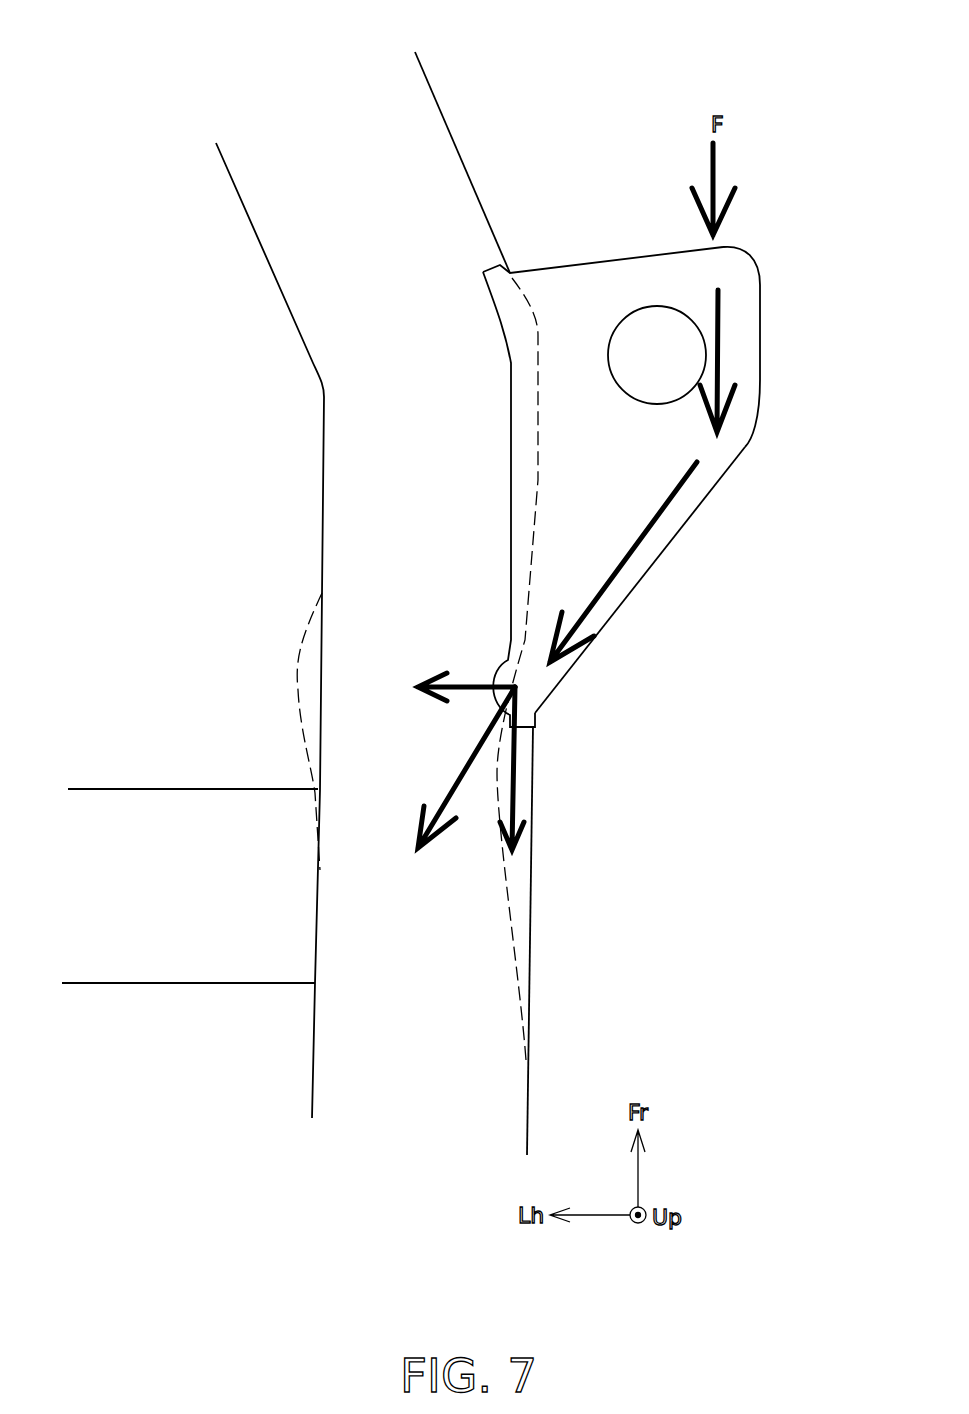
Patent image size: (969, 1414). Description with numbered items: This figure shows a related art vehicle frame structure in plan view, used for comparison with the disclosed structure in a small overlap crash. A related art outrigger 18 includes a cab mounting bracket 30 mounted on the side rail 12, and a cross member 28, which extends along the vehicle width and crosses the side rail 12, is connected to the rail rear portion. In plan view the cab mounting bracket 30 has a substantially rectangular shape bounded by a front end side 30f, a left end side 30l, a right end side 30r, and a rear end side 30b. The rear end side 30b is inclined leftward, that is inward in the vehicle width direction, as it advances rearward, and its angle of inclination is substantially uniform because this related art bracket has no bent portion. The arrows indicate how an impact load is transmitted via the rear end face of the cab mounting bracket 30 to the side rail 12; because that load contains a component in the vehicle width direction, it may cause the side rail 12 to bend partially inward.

The side rail 12 is at (435, 153).
The outrigger 18 is at (626, 588).
The cross member 28 is at (152, 803).
The cab mounting bracket 30 is at (626, 674).
The front end side 30f is at (565, 267).
The right end side 30r is at (761, 340).
The left end side 30l is at (512, 472).
The rear end side 30b is at (662, 548).